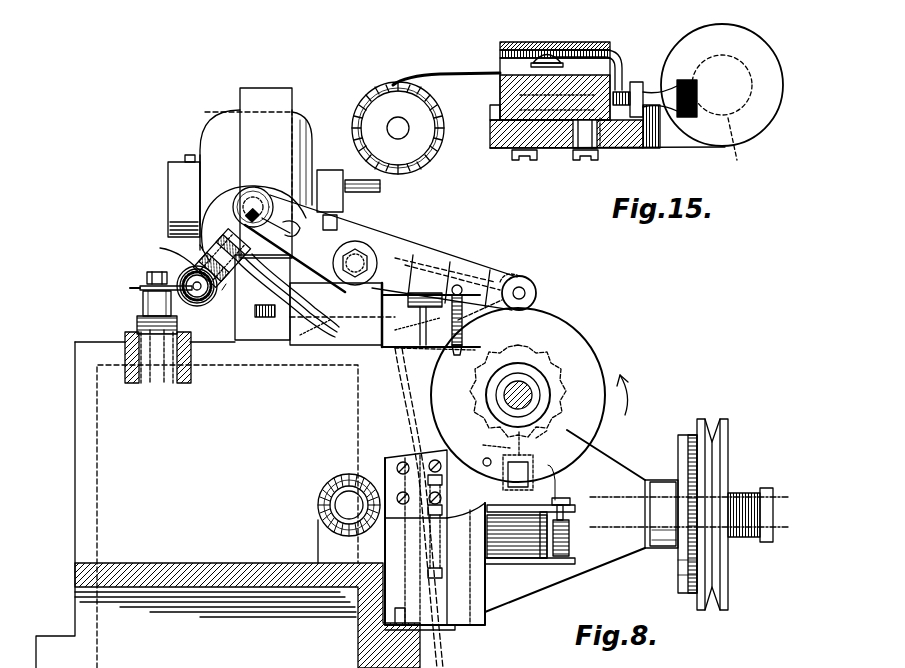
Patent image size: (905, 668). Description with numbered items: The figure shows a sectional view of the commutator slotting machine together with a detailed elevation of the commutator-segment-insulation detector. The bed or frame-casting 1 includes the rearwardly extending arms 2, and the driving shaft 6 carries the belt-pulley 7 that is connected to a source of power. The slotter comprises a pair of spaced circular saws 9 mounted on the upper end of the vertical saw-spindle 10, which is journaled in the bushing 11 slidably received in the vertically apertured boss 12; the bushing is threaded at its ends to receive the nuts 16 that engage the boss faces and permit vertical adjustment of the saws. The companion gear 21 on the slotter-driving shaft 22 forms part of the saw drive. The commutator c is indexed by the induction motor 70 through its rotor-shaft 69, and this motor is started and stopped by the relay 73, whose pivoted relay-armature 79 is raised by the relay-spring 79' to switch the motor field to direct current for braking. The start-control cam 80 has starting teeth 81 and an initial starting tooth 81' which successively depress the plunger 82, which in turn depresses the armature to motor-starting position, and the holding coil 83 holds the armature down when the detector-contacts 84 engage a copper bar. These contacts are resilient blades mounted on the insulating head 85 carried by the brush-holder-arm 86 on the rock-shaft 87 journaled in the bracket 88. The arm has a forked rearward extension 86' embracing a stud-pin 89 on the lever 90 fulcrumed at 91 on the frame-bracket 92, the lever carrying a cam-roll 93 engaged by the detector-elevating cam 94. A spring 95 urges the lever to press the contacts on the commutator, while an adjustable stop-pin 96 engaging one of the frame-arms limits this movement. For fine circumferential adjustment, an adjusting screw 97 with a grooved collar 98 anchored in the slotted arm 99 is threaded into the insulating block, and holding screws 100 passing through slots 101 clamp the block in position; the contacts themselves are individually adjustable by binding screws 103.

In FIG. 8, the bed or frame-casting 1 is at (75, 410).
In FIG. 8, the rearwardly extending arms 2 is at (470, 355).
In FIG. 8, the driving shaft 6 is at (650, 530).
In FIG. 8, the belt-pulley 7 is at (712, 610).
In FIG. 8, the circular slot-cutters or saws 9 is at (140, 288).
In FIG. 8, the saw-spindle 10 is at (143, 302).
In FIG. 8, the bushing 11 is at (125, 352).
In FIG. 8, the vertically apertured boss 12 is at (192, 352).
In FIG. 8, the nuts 16 is at (137, 326).
In FIG. 8, the companion gear 21 is at (330, 505).
In FIG. 8, the slotter-driving shaft 22 is at (347, 480).
In FIG. 8, the rotor-shaft 69 is at (362, 192).
In FIG. 8, the self-starting single-phase induction motor 70 is at (300, 120).
In FIG. 8, the relay 73 is at (468, 603).
In FIG. 8, the relay-armature 79 is at (571, 492).
In FIG. 8, the relay-spring 79' is at (579, 538).
In FIG. 8, the start-control cam 80 is at (560, 378).
In FIG. 8, the starting teeth 81 is at (518, 380).
In FIG. 8, the initial starting tooth 81' is at (518, 446).
In FIG. 8, the plunger 82 is at (525, 453).
In FIG. 8, the holding coil 83 is at (537, 548).
In FIG. 15, the commutator-segment-insulation detector-contacts or brushes 84 is at (435, 74).
In FIG. 8, the commutator-segment-insulation detector-contacts or brushes 84 is at (195, 265).
In FIG. 15, the insulating head 85 is at (500, 80).
In FIG. 8, the insulating head 85 is at (200, 225).
In FIG. 15, the brush-holder-arm 86 is at (607, 153).
In FIG. 8, the brush-holder-arm 86 is at (262, 297).
In FIG. 8, the rearward extension 86' is at (377, 418).
In FIG. 15, the rock-shaft 87 is at (722, 103).
In FIG. 8, the rock-shaft 87 is at (253, 196).
In FIG. 8, the bracket 88 is at (233, 205).
In FIG. 8, the stud-pin 89 is at (300, 258).
In FIG. 8, the lever 90 is at (398, 255).
In FIG. 8, the fulcrum 91 is at (368, 250).
In FIG. 8, the frame-bracket 92 is at (350, 297).
In FIG. 8, the cam-roll 93 is at (537, 292).
In FIG. 8, the detector-elevating cam 94 is at (485, 300).
In FIG. 8, the spring 95 is at (452, 305).
In FIG. 8, the adjustable stop-pin 96 is at (418, 317).
In FIG. 15, the adjusting screw 97 is at (632, 82).
In FIG. 8, the adjusting screw 97 is at (250, 243).
In FIG. 15, the grooved collar 98 is at (672, 78).
In FIG. 15, the slotted arm 99 is at (638, 82).
In FIG. 15, the holding screws 100 is at (518, 162).
In FIG. 15, the slots 101 is at (505, 142).
In FIG. 15, the binding screws 103 is at (532, 62).
In FIG. 15, the commutator C is at (422, 122).
In FIG. 8, the commutator C is at (203, 306).